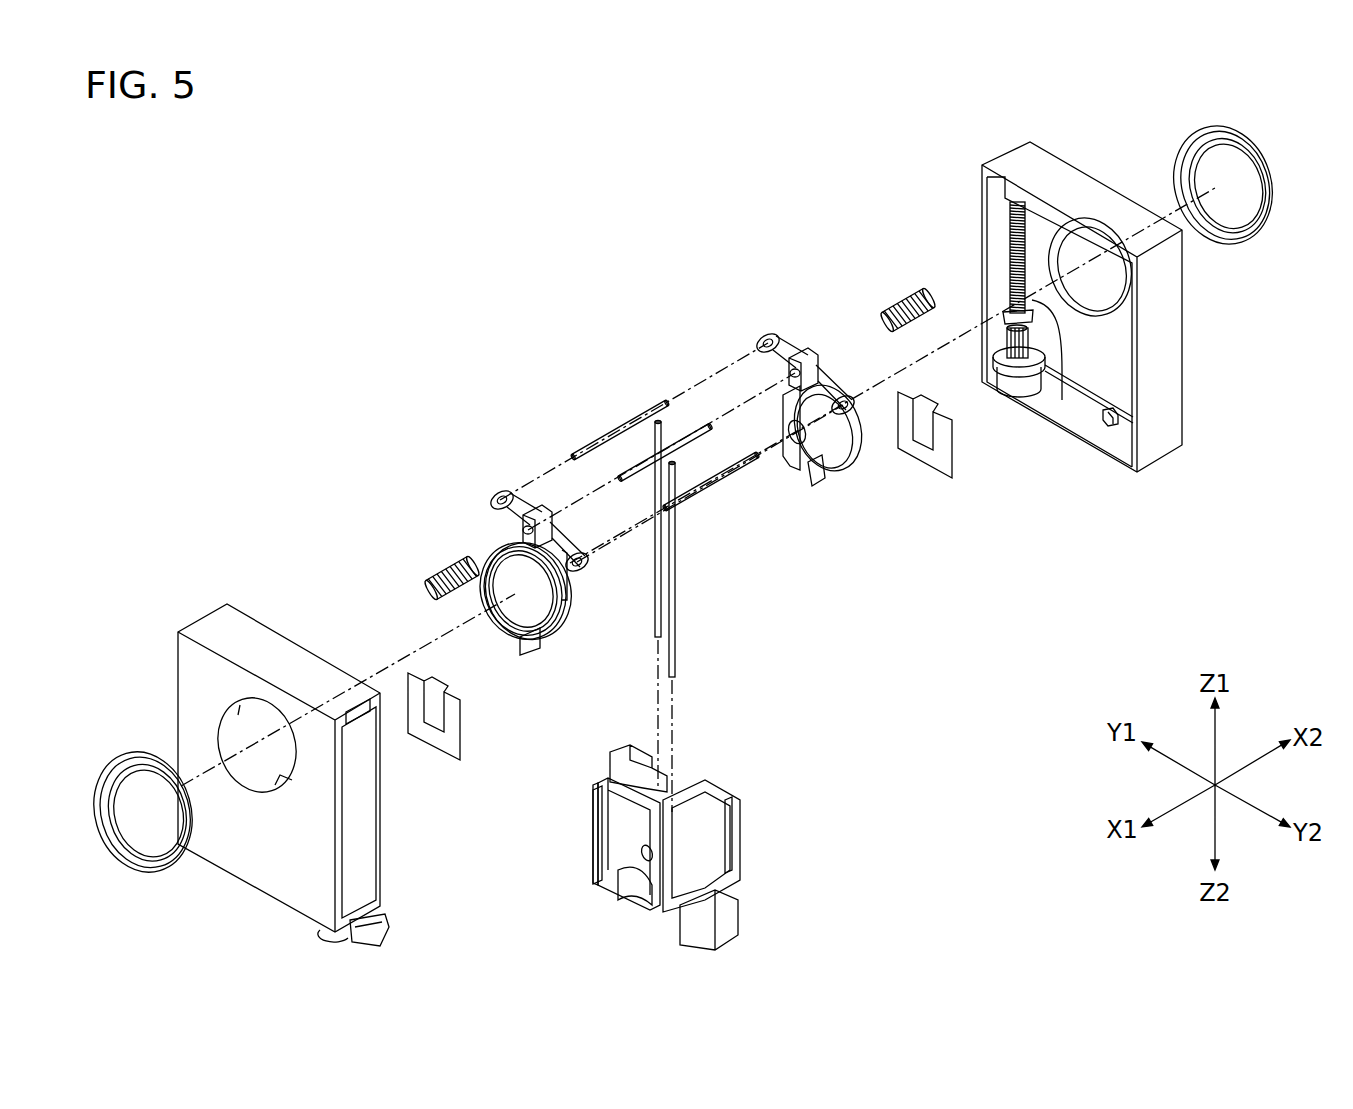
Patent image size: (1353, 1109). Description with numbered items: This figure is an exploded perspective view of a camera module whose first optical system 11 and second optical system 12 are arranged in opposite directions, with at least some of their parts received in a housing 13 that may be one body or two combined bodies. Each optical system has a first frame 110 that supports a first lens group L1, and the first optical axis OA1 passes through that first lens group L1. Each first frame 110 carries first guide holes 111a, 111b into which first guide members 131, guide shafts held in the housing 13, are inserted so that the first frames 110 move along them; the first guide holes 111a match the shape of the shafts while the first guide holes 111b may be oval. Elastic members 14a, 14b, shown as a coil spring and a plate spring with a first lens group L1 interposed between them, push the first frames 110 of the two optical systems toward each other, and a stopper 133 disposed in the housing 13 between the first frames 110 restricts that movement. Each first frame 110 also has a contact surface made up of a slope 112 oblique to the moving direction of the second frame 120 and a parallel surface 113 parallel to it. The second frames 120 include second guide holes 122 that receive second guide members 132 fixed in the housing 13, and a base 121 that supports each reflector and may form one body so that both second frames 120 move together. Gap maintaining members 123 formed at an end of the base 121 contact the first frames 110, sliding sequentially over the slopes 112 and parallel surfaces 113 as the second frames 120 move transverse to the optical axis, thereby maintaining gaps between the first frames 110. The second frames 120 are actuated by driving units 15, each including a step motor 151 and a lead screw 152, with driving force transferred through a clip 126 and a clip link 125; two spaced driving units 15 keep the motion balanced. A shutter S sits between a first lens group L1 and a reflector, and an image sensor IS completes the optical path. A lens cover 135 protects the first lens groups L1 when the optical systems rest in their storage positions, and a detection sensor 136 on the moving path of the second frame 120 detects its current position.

The first optical system 11 is at (478, 487).
The second optical system 12 is at (768, 330).
The housing 13 is at (218, 620).
The elastic member 14a is at (442, 565).
The elastic member 14b is at (434, 748).
The driving unit 15 is at (397, 943).
The first frame 110 is at (563, 636).
The first guide hole 111a is at (525, 522).
The first guide hole 111b is at (503, 492).
The slope 112 is at (800, 470).
The parallel surface 113 is at (792, 440).
The second frame 120 is at (596, 766).
The base 121 is at (628, 815).
The second guide hole 122 is at (673, 813).
The gap maintaining member 123 is at (647, 820).
The clip link 125 is at (702, 843).
The clip 126 is at (713, 922).
The first guide member 131 is at (608, 435).
The second guide member 132 is at (680, 588).
The stopper 133 is at (1008, 192).
The lens cover 135 is at (137, 824).
The detection sensor 136 is at (1110, 427).
The step motor 151 is at (1018, 382).
The lead screw 152 is at (1062, 370).
The first optical axis OA1 is at (398, 668).
The first lens group L1 is at (524, 615).
The image sensor IS is at (595, 808).
The shutter S is at (637, 893).